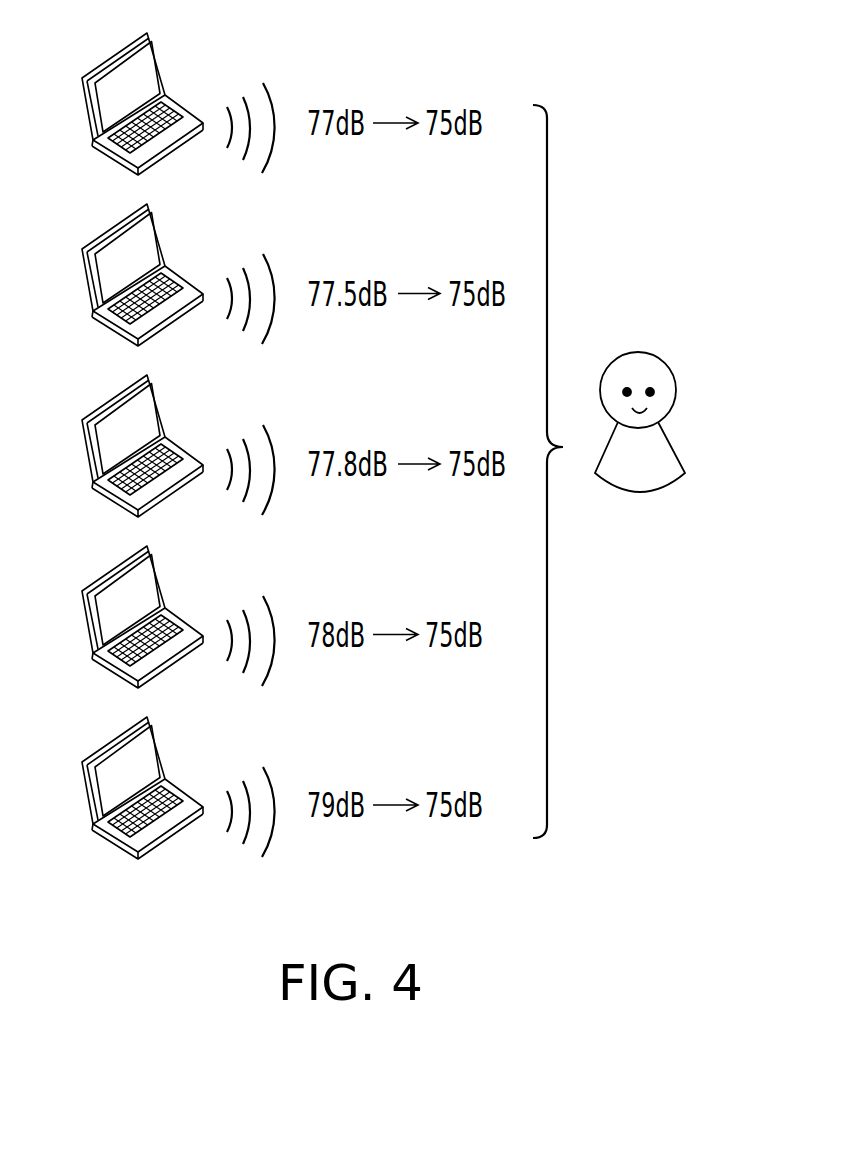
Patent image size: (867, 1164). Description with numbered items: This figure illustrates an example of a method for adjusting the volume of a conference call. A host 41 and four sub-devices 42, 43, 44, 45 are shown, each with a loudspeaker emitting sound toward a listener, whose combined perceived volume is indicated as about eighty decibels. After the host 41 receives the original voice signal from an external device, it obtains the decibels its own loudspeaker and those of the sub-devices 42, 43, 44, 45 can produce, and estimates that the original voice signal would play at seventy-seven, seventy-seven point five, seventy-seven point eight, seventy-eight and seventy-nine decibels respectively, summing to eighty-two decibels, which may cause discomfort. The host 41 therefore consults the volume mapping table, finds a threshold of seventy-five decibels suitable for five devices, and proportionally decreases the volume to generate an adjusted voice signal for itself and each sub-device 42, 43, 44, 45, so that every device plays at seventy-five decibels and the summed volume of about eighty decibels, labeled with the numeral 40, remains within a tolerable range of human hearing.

The user / listener 40 is at (638, 352).
The host 41 is at (112, 53).
The sub-device 42 is at (164, 262).
The sub-device 43 is at (164, 433).
The sub-device 44 is at (164, 604).
The sub-device 45 is at (164, 775).